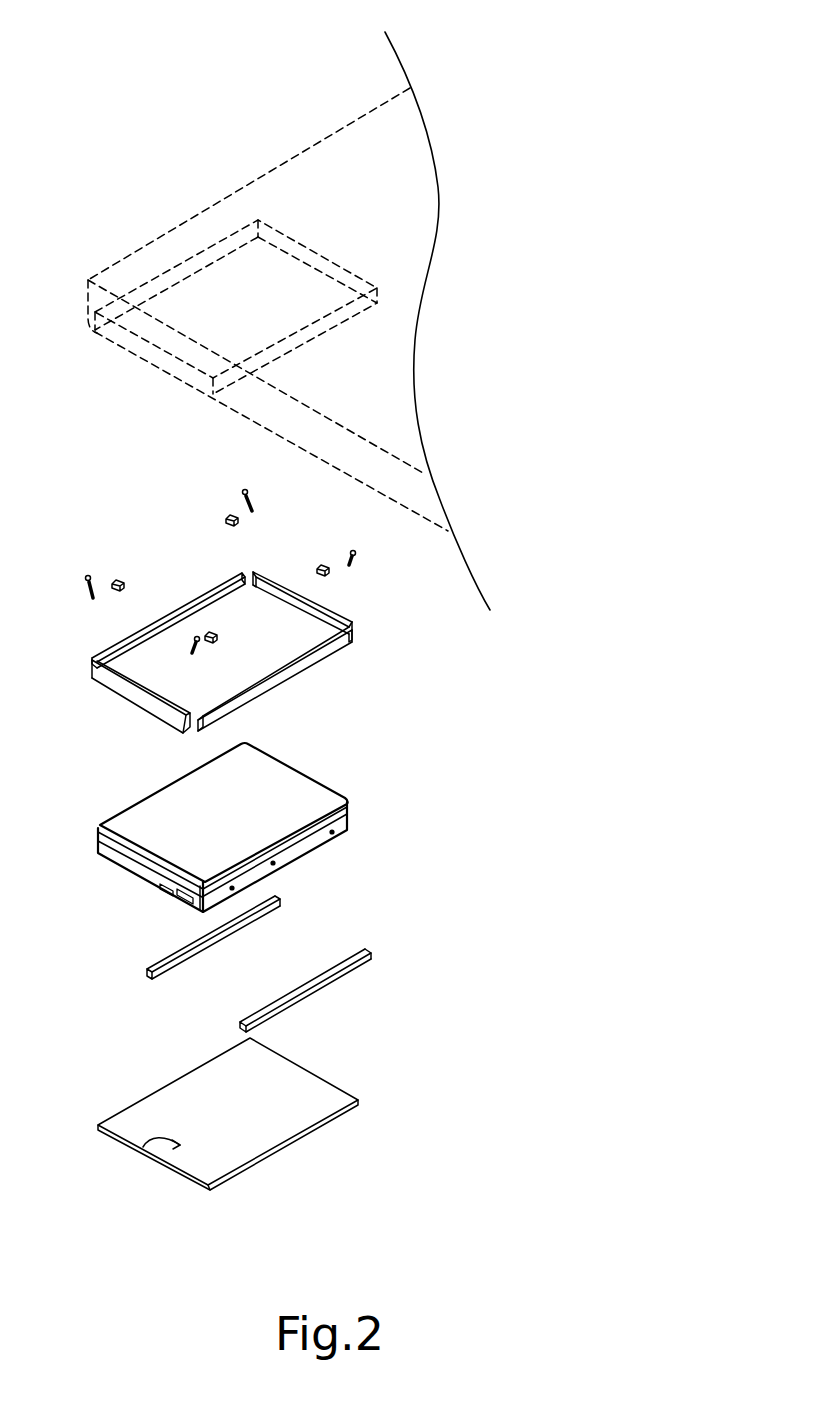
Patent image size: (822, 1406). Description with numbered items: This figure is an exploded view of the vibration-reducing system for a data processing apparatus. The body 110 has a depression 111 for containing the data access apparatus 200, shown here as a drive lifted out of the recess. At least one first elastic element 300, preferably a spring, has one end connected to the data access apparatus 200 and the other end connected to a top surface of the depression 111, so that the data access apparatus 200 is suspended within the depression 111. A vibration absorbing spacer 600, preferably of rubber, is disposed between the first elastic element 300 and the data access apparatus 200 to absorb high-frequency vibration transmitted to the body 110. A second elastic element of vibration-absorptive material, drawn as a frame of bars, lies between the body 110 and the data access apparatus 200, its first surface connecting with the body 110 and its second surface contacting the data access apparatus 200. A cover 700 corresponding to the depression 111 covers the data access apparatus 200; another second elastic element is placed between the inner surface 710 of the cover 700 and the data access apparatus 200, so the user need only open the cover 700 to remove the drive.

The body 110 is at (357, 160).
The depression 111 is at (167, 280).
The data access apparatus 200 is at (300, 805).
The first elastic element 300 is at (357, 559).
The vibration absorbing spacer 600 is at (113, 579).
The cover 700 is at (267, 1113).
The inner surface 710 is at (143, 1142).